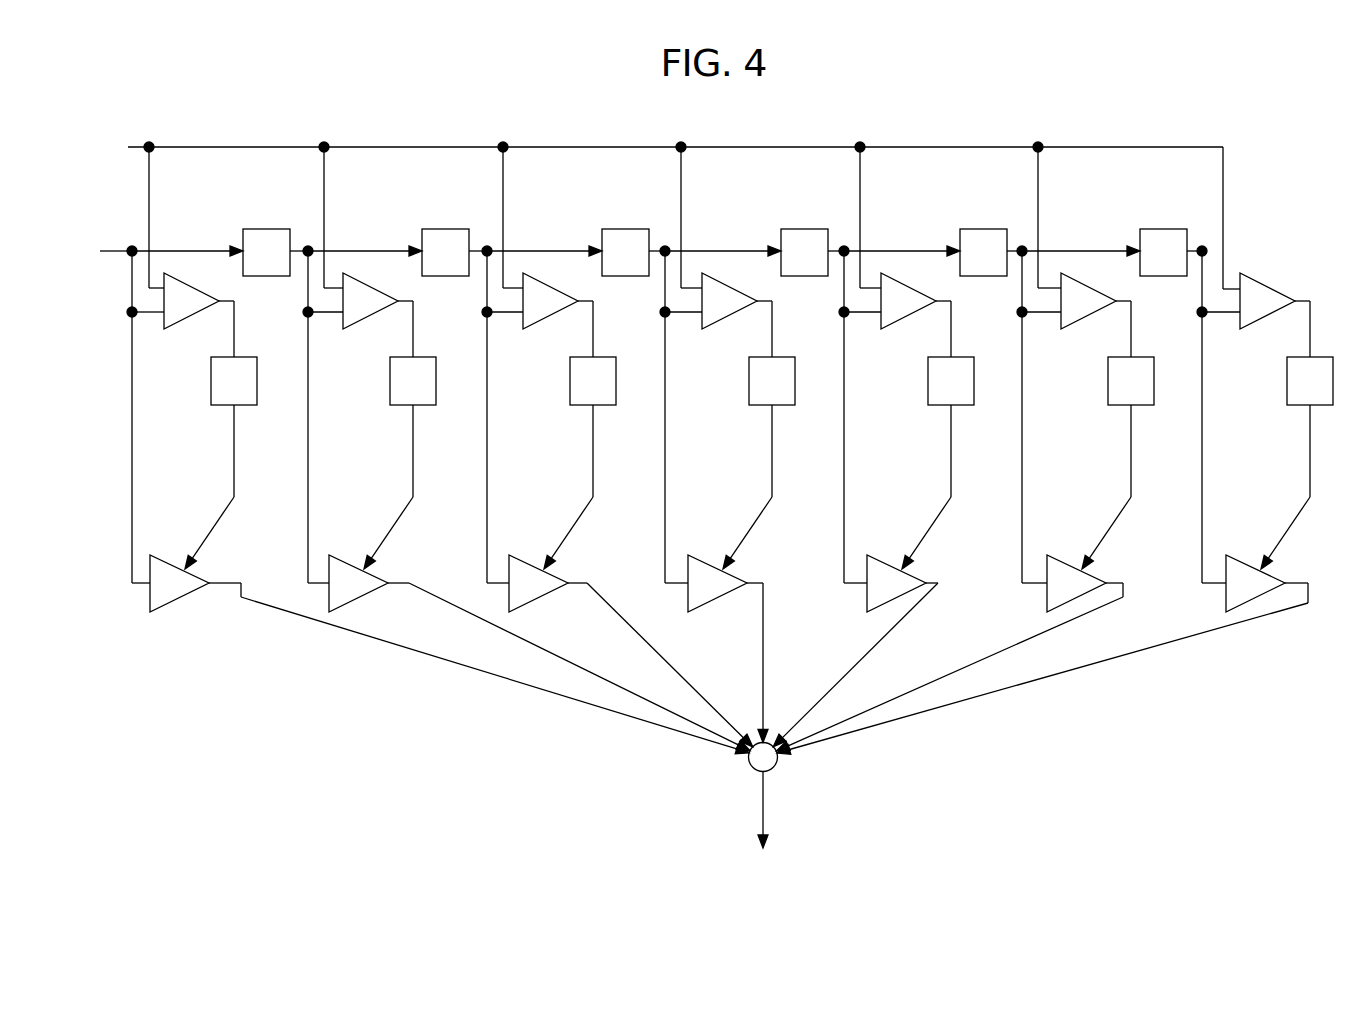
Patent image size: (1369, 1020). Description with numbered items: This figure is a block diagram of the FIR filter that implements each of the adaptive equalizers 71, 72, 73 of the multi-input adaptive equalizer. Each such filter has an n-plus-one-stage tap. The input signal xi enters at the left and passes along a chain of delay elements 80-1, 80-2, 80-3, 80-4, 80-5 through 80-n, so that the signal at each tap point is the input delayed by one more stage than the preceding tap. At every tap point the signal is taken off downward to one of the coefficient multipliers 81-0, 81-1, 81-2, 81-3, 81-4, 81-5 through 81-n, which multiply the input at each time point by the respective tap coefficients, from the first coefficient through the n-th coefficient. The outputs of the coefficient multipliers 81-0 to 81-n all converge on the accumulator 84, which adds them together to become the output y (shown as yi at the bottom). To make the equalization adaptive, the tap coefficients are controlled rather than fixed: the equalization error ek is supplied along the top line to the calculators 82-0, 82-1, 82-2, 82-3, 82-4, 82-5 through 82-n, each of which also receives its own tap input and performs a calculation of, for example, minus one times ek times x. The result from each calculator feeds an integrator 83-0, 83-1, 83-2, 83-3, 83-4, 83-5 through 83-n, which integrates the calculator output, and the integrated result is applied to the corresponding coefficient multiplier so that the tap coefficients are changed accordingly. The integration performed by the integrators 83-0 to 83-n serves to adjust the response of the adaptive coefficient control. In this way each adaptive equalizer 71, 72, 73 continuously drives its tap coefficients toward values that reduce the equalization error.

The adaptive equalizer 71 is at (703, 454).
The adaptive equalizer 72 is at (703, 454).
The adaptive equalizer 73 is at (703, 454).
The delay element 80-1 is at (260, 229).
The delay element 80-2 is at (439, 229).
The delay element 80-3 is at (619, 229).
The delay element 80-4 is at (798, 229).
The delay element 80-5 is at (977, 229).
The delay element 80-n is at (1157, 229).
The calculator 82-0 is at (178, 322).
The calculator 82-1 is at (357, 322).
The calculator 82-2 is at (537, 322).
The calculator 82-3 is at (716, 322).
The calculator 82-4 is at (895, 322).
The calculator 82-5 is at (1075, 322).
The calculator 82-n is at (1254, 322).
The integrator 83-0 is at (216, 405).
The integrator 83-1 is at (395, 405).
The integrator 83-2 is at (575, 405).
The integrator 83-3 is at (754, 405).
The integrator 83-4 is at (933, 405).
The integrator 83-5 is at (1113, 405).
The integrator 83-n is at (1292, 405).
The coefficient multiplier 81-0 is at (174, 604).
The coefficient multiplier 81-1 is at (355, 600).
The coefficient multiplier 81-2 is at (535, 600).
The coefficient multiplier 81-3 is at (712, 604).
The coefficient multiplier 81-4 is at (865, 598).
The coefficient multiplier 81-5 is at (1043, 598).
The coefficient multiplier 81-n is at (1225, 597).
The accumulator 84 is at (775, 768).